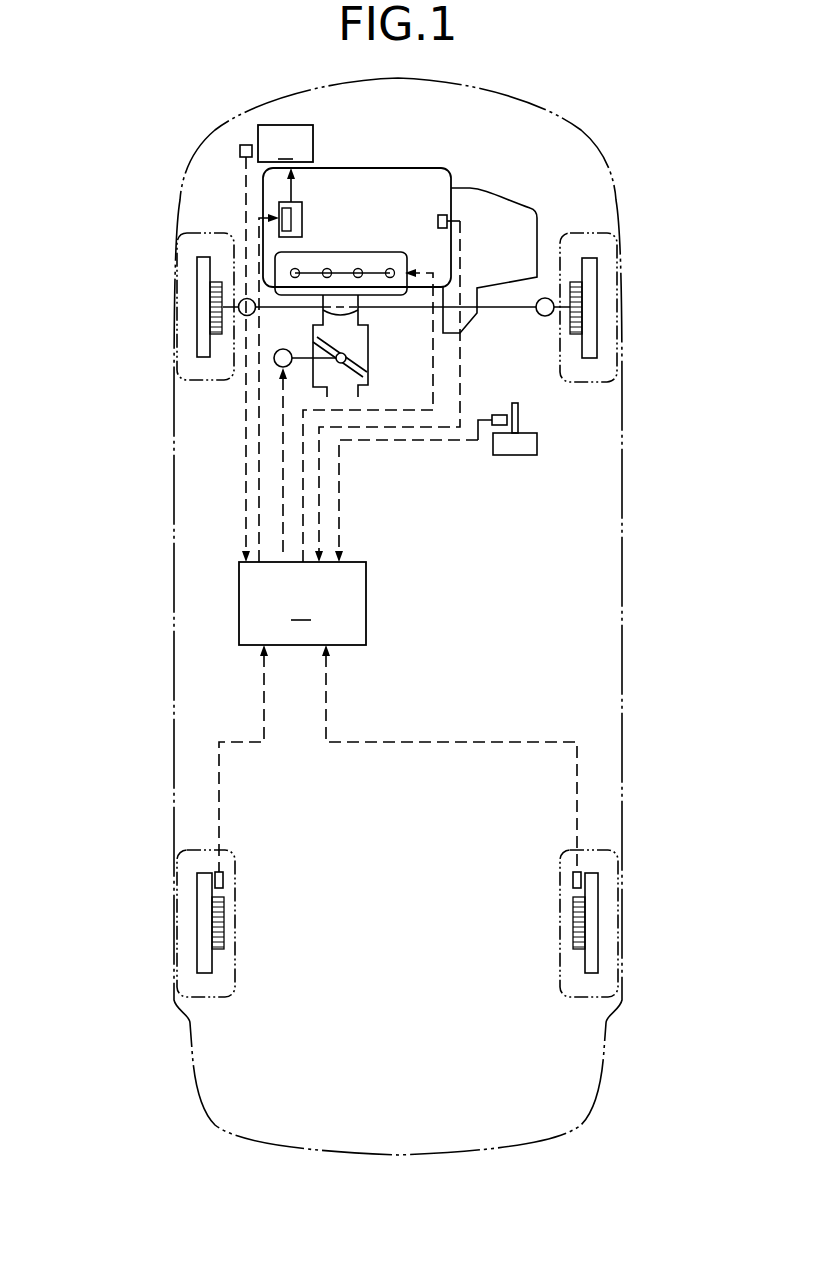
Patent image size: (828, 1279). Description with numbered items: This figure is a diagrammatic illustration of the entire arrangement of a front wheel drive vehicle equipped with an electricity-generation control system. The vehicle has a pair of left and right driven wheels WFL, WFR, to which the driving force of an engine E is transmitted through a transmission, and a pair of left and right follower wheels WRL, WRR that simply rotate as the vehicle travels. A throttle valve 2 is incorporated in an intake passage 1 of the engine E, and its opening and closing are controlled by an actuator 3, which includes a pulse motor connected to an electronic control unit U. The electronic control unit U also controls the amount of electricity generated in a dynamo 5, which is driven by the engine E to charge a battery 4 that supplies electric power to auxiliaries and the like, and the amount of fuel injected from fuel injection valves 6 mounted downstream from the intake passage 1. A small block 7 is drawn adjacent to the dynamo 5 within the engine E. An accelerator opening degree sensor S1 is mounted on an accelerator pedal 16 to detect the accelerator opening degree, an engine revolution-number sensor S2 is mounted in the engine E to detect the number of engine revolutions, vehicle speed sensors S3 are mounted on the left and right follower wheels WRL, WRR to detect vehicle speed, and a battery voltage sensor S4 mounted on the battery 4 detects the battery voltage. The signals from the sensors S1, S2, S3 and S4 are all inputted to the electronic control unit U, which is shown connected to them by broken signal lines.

The intake passage 1 is at (363, 393).
The throttle valve 2 is at (333, 345).
The actuator 3 is at (293, 347).
The battery 4 is at (285, 143).
The dynamo 5 is at (296, 222).
The fuel injection valves 6 is at (390, 270).
The actuator unit 7 is at (289, 204).
The accelerator pedal 16 is at (527, 442).
The engine E is at (395, 160).
The electronic control unit U is at (398, 543).
The accelerator opening degree sensor S1 is at (500, 413).
The engine revolution-number sensor S2 is at (437, 220).
The vehicle speed sensors S3 is at (224, 880).
The battery voltage sensor S4 is at (238, 157).
The left driven wheel WFL is at (177, 295).
The right driven wheel WFR is at (618, 300).
The left follower wheel WRL is at (177, 908).
The right follower wheel WRR is at (618, 920).